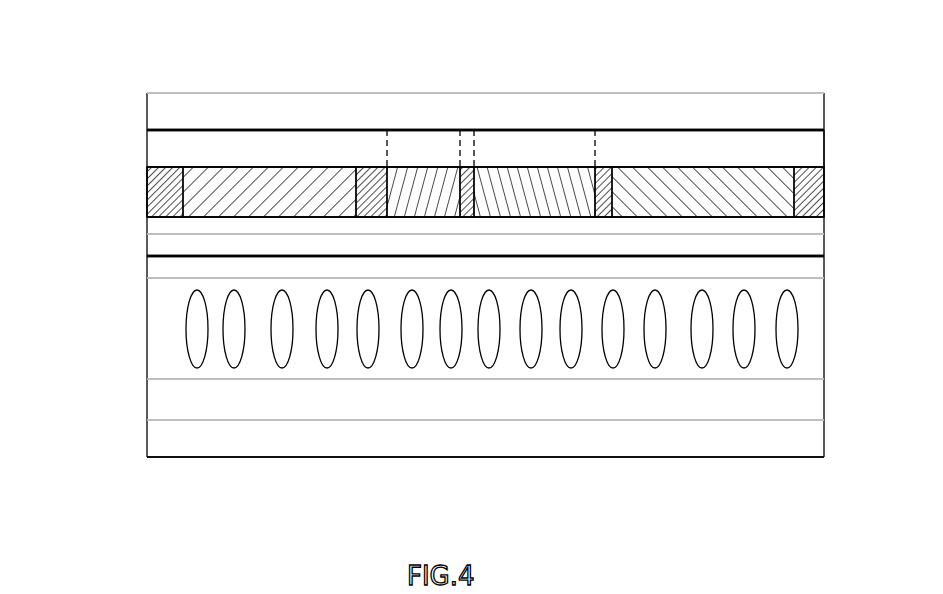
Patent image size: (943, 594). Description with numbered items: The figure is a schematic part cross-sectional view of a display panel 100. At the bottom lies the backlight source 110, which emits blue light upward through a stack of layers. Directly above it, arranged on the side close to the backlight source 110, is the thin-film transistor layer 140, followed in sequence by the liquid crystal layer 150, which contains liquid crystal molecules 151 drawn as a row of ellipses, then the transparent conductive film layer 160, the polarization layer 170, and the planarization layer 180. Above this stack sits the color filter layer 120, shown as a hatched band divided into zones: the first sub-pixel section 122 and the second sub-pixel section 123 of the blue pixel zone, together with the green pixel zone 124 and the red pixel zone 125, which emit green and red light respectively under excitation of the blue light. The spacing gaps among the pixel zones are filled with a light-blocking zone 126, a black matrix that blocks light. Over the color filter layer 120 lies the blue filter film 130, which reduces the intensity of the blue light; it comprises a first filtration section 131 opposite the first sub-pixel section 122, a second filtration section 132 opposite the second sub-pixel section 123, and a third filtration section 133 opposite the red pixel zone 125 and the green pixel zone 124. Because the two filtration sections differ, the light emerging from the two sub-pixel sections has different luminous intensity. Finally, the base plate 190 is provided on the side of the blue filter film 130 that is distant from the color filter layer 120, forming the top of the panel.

The display panel 100 is at (104, 53).
The backlight source 110 is at (172, 447).
The color filter layer 120 is at (465, 138).
The first sub-pixel section 122 is at (431, 197).
The second sub-pixel section 123 is at (553, 186).
The green pixel zone 124 is at (291, 186).
The red pixel zone 125 is at (680, 172).
The light-blocking zone 126 is at (803, 210).
The blue filter film 130 is at (451, 113).
The first filtration section 131 is at (445, 153).
The second filtration section 132 is at (492, 158).
The third filtration section 133 is at (753, 148).
The thin-film transistor layer 140 is at (172, 407).
The liquid crystal layer 150 is at (470, 328).
The liquid crystal molecules 151 is at (780, 325).
The transparent conductive film layer 160 is at (170, 267).
The polarization layer 170 is at (168, 250).
The planarization layer 180 is at (168, 225).
The base plate 190 is at (172, 120).